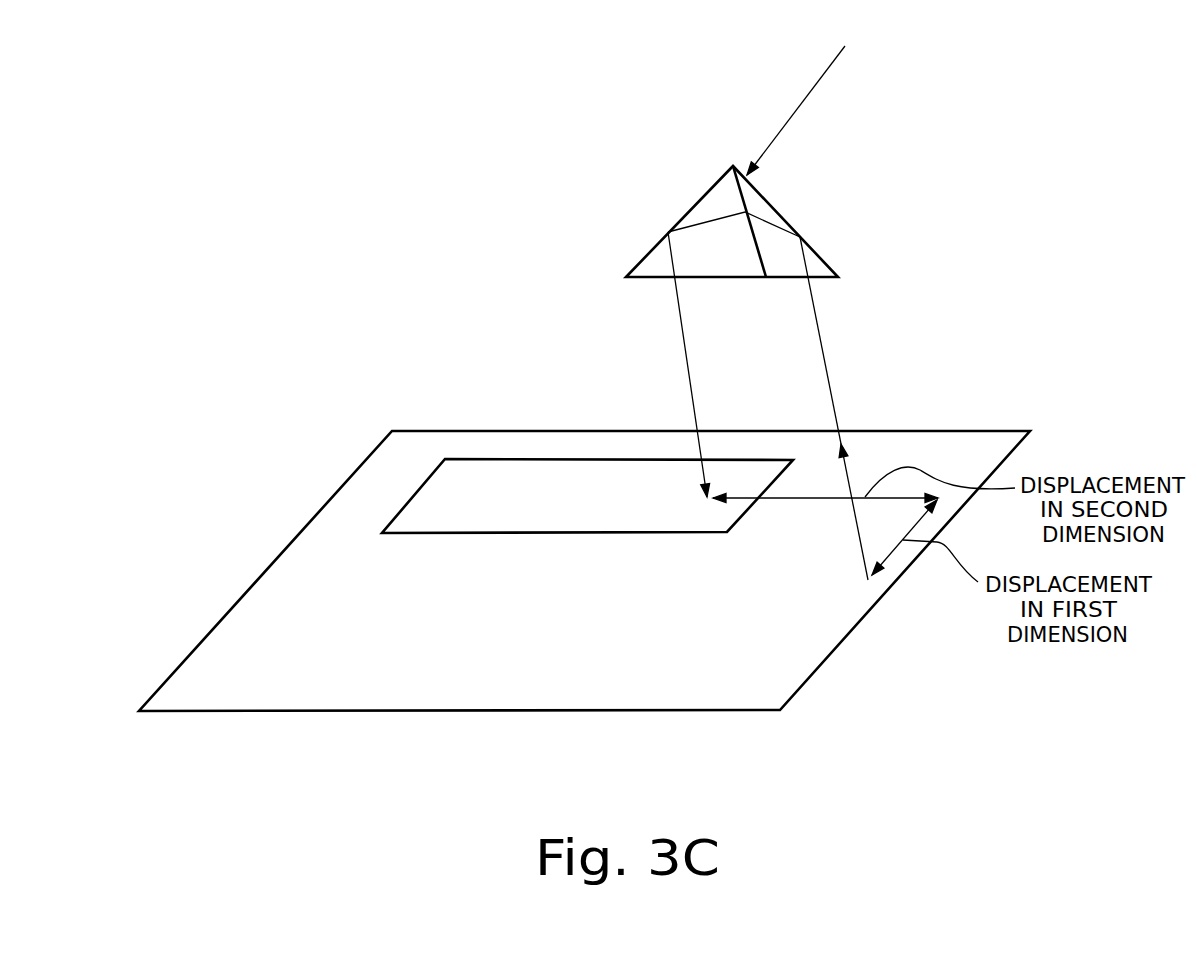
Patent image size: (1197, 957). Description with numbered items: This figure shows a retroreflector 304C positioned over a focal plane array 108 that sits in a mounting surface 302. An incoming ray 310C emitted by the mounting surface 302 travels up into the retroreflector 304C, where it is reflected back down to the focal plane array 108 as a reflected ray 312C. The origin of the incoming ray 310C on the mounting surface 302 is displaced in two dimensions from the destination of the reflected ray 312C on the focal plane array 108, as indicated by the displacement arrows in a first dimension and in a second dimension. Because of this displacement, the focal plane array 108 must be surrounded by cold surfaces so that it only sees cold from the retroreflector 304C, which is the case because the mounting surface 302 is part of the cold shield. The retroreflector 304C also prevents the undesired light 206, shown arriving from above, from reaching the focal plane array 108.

The undesired light 206 is at (818, 83).
The retroreflector 304C is at (773, 205).
The reflected ray 312C is at (682, 327).
The incoming ray 310C is at (825, 353).
The focal plane array 108 is at (530, 533).
The mounting surface 302 is at (233, 713).